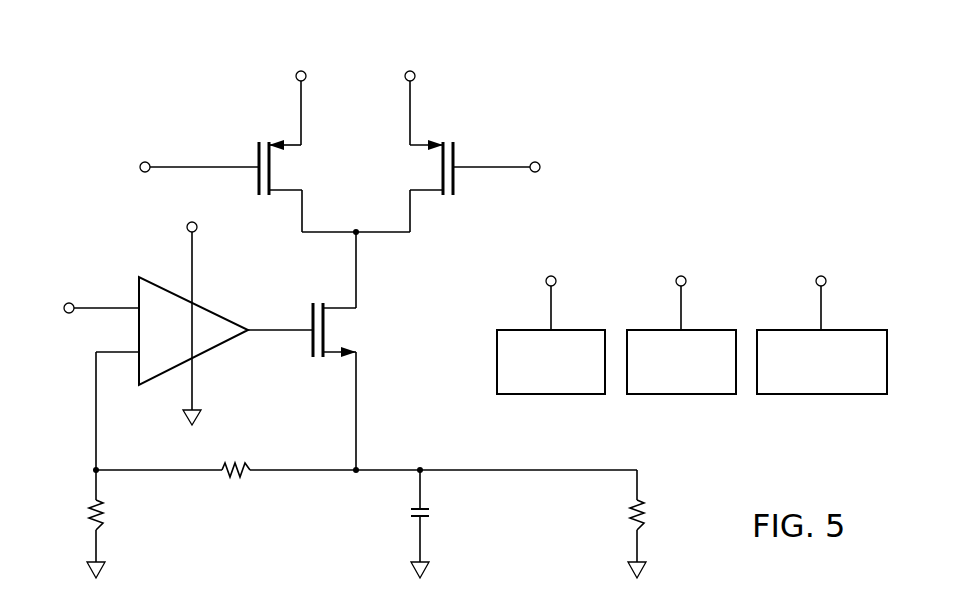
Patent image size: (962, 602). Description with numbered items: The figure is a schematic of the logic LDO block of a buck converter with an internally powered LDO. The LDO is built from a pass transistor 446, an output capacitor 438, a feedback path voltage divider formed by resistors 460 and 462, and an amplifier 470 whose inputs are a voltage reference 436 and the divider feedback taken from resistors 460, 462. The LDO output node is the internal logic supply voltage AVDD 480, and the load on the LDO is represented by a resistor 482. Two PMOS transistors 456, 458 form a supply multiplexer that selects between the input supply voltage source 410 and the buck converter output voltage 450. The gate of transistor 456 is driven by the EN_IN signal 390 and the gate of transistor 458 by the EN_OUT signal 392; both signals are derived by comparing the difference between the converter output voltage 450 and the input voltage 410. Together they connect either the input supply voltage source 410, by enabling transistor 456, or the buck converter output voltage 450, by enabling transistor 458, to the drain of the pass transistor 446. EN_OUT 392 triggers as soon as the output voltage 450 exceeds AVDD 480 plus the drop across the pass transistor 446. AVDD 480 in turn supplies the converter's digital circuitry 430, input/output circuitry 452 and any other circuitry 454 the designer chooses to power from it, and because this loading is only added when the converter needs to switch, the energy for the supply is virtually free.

The digital circuitry 430 is at (68, 88).
The input supply voltage source 410 is at (298, 103).
The buck converter output voltage 450 is at (412, 103).
The EN_IN signal 390 is at (172, 165).
The PMOS transistor 456 is at (256, 155).
The PMOS transistor 458 is at (456, 155).
The EN_OUT signal 392 is at (508, 170).
The voltage reference 436 is at (96, 306).
The amplifier 470 is at (197, 343).
The pass transistor 446 is at (310, 318).
The internal logic supply voltage AVDD 480 is at (418, 464).
The input/output circuitry 452 is at (690, 396).
The other circuitry 454 is at (832, 396).
The resistor 460 is at (232, 480).
The resistor 462 is at (100, 515).
The output capacitor 438 is at (432, 512).
The resistor 482 is at (642, 515).